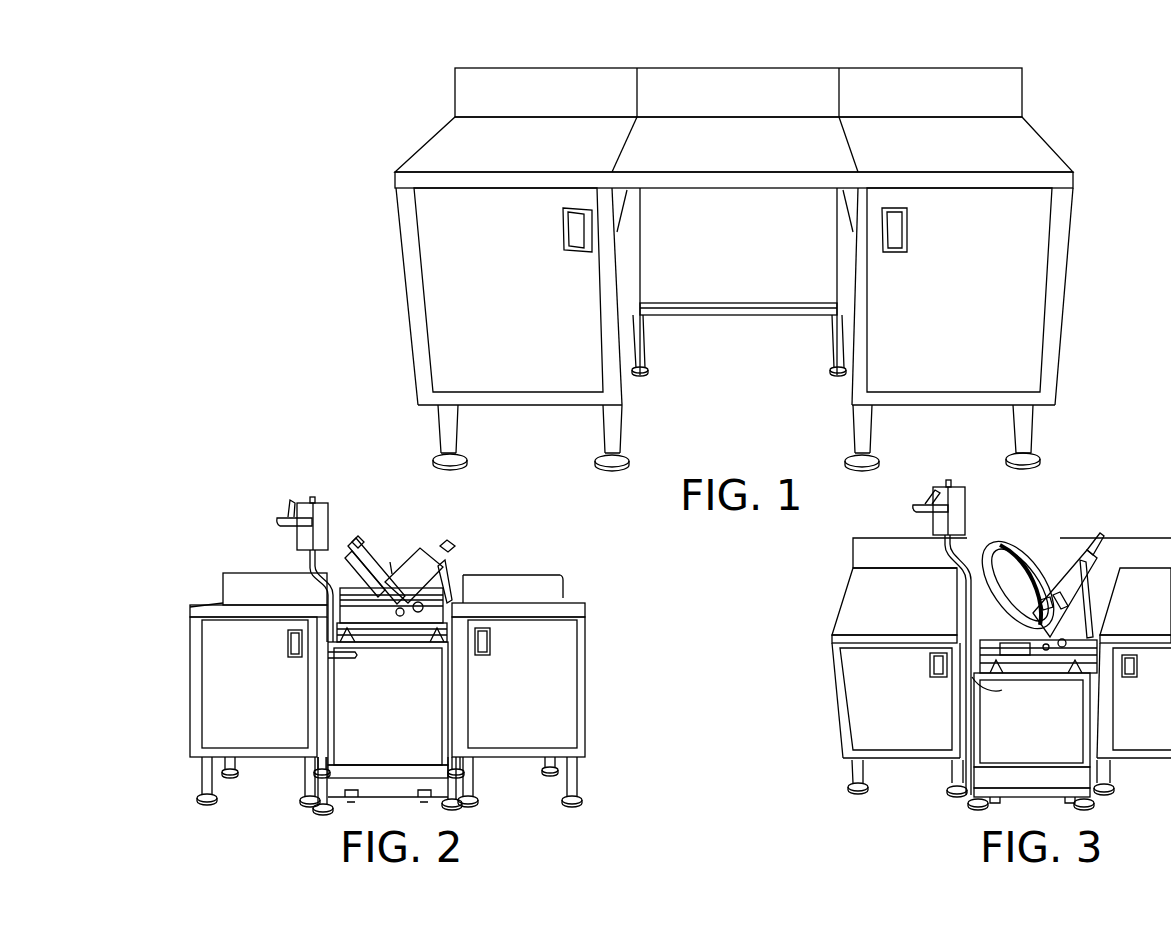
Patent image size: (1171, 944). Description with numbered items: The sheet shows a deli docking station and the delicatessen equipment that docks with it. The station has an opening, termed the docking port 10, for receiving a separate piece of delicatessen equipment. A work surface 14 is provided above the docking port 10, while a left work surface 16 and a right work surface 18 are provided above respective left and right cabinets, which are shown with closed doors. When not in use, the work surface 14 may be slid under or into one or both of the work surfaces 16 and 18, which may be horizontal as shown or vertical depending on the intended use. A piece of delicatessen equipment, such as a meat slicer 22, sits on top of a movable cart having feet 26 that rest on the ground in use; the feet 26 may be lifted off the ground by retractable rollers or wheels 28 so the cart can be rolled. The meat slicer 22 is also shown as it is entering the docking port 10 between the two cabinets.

In FIG. 1, the docking port 10 is at (743, 249).
In FIG. 1, the work surface 14 is at (737, 137).
In FIG. 1, the left work surface 16 is at (517, 150).
In FIG. 1, the right work surface 18 is at (992, 145).
In FIG. 2, the meat slicer 22 is at (433, 580).
In FIG. 2, the retractable rollers or wheels 28 is at (430, 802).
In FIG. 3, the feet 26 is at (968, 810).